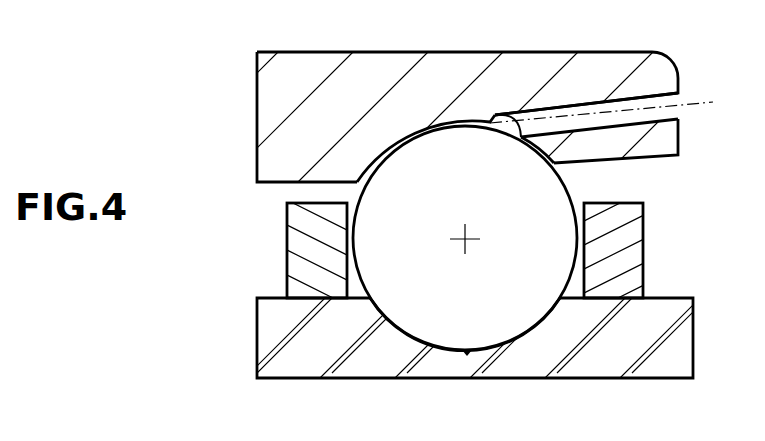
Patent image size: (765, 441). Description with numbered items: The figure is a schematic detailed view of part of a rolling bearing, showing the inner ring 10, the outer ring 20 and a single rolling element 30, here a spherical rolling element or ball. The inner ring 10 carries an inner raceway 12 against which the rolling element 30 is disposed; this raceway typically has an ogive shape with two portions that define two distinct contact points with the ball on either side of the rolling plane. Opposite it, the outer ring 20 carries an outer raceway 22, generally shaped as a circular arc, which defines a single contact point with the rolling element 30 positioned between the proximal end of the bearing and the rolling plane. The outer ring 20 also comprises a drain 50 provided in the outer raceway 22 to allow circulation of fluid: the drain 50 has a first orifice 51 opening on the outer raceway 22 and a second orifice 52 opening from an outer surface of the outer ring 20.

The inner ring 10 is at (635, 364).
The inner raceway 12 is at (421, 343).
The outer ring 20 is at (466, 62).
The outer raceway 22 is at (378, 151).
The rolling element 30 is at (453, 203).
The drain 50 is at (591, 111).
The first orifice 51 is at (491, 122).
The second orifice 52 is at (701, 101).